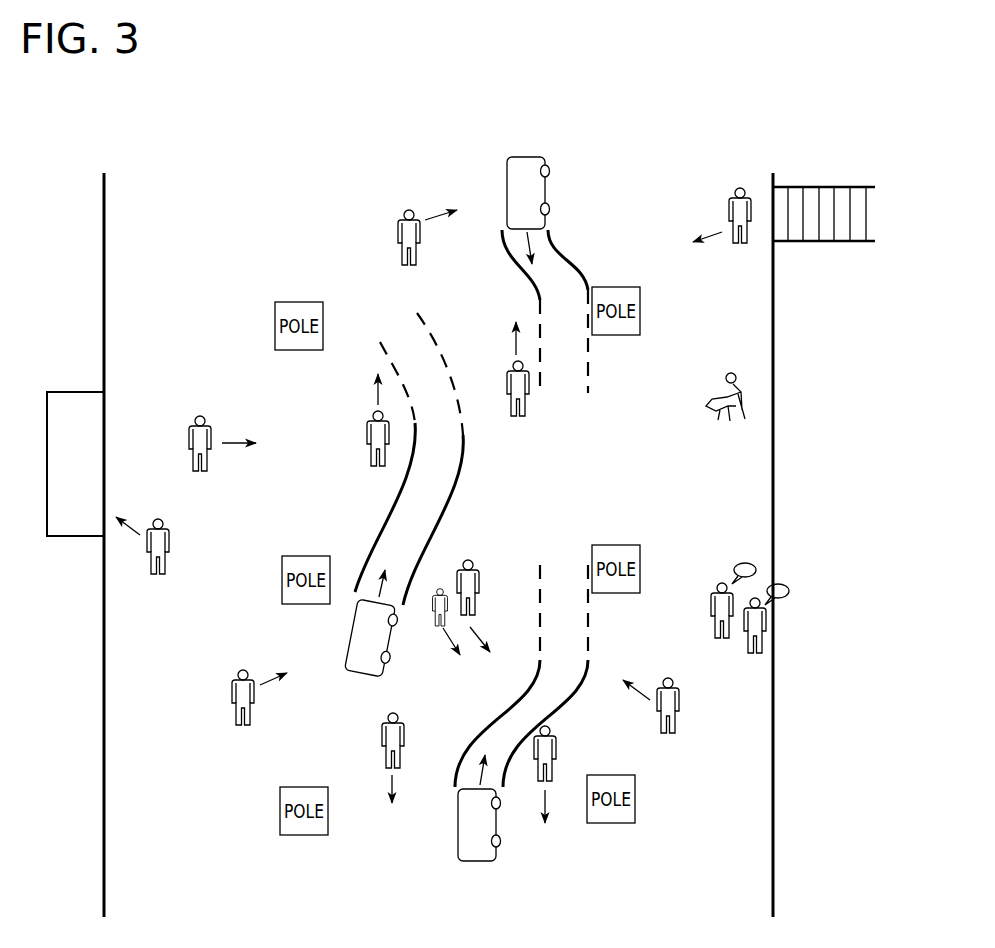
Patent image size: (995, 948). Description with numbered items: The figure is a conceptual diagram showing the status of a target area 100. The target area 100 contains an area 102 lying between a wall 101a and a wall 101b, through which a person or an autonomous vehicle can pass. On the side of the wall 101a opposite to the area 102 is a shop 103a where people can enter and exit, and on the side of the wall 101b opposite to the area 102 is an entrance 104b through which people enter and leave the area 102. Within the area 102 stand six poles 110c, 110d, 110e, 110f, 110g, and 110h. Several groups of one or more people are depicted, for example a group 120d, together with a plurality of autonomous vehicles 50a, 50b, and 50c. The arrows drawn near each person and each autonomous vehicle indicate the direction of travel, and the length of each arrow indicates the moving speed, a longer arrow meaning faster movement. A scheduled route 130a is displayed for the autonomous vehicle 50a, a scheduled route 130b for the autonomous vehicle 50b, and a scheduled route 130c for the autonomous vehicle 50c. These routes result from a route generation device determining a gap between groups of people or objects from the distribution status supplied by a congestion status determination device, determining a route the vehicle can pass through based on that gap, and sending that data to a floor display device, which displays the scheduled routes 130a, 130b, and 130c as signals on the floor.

The target area 100 is at (298, 163).
The wall 101a is at (104, 292).
The wall 101b is at (775, 347).
The area 102 is at (214, 350).
The shop 103a is at (77, 538).
The entrance 104b is at (867, 215).
The pole 110c is at (298, 300).
The pole 110d is at (303, 554).
The pole 110e is at (280, 810).
The pole 110f is at (642, 311).
The pole 110g is at (617, 543).
The pole 110h is at (610, 825).
The group of people 120d is at (235, 706).
The scheduled route 130a is at (463, 462).
The scheduled route 130b is at (478, 722).
The scheduled route 130c is at (564, 253).
The autonomous vehicle 50a is at (360, 674).
The autonomous vehicle 50b is at (471, 863).
The autonomous vehicle 50c is at (528, 157).